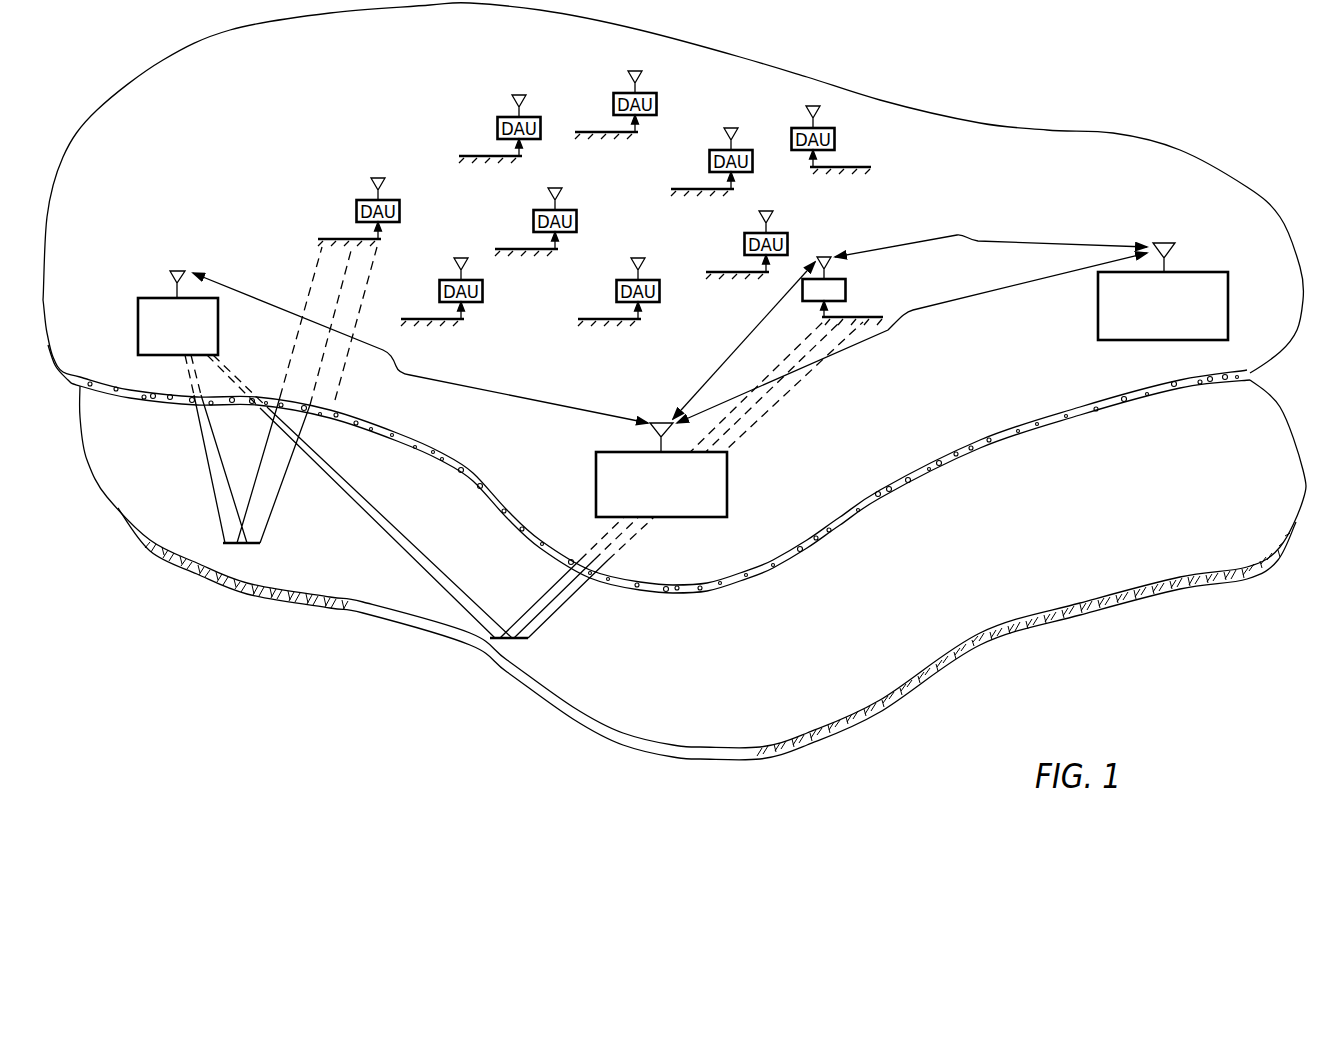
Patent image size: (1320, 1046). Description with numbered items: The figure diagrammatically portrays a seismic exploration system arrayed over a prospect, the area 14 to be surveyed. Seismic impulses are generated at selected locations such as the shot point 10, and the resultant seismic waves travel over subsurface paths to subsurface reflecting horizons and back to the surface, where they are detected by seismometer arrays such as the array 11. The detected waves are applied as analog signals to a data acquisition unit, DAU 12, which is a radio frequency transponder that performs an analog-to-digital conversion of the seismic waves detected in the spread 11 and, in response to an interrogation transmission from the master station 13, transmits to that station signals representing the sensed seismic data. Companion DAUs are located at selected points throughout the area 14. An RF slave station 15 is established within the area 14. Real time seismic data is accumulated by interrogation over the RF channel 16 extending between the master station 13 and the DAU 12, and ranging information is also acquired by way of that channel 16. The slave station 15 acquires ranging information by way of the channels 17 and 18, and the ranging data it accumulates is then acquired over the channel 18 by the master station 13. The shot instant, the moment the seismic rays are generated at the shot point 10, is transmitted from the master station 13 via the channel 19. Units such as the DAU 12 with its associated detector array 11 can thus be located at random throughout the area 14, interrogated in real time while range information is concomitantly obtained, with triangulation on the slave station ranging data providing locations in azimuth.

The shot point 10 is at (218, 340).
The seismometer array 11 is at (848, 316).
The data acquisition unit (DAU) 12 is at (845, 286).
The master station 13 is at (727, 470).
The area to be surveyed 14 is at (1060, 117).
The RF slave station 15 is at (1228, 306).
The RF channel 16 is at (775, 308).
The channel 17 is at (997, 240).
The channel 18 is at (990, 288).
The channel 19 is at (487, 392).